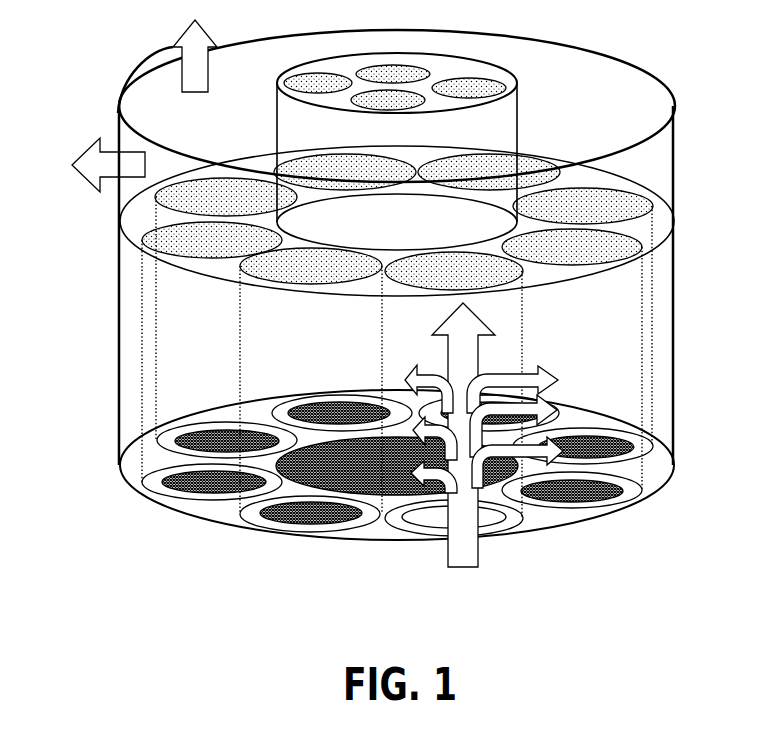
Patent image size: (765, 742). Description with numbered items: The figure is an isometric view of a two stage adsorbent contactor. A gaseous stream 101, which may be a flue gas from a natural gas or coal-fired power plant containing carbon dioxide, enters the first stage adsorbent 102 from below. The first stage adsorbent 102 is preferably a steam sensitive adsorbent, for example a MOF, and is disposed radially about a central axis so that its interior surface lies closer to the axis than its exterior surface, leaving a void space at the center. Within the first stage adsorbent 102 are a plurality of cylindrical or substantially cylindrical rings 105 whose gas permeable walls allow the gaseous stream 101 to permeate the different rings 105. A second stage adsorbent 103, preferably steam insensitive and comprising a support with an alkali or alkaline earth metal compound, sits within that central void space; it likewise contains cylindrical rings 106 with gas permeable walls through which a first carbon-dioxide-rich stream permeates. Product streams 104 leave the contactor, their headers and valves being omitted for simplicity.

The gaseous stream 101 is at (479, 550).
The first stage adsorbent 102 is at (118, 370).
The second stage adsorbent 103 is at (495, 68).
The product streams 104 is at (173, 47).
The cylindrical rings 105 is at (240, 349).
The cylindrical rings 106 is at (420, 93).